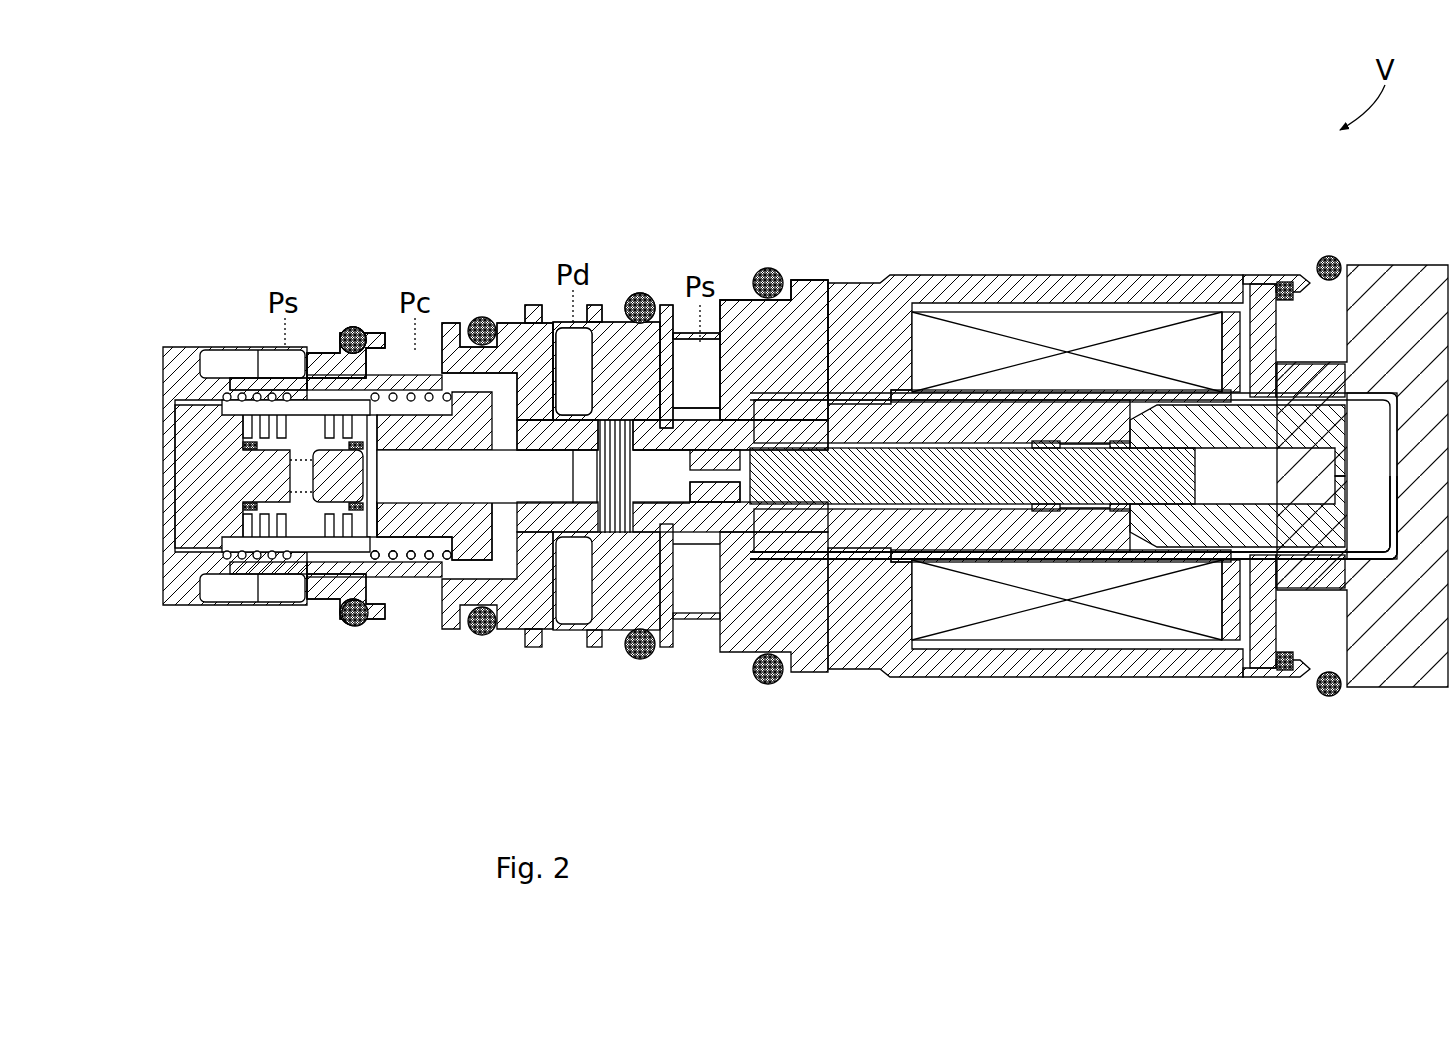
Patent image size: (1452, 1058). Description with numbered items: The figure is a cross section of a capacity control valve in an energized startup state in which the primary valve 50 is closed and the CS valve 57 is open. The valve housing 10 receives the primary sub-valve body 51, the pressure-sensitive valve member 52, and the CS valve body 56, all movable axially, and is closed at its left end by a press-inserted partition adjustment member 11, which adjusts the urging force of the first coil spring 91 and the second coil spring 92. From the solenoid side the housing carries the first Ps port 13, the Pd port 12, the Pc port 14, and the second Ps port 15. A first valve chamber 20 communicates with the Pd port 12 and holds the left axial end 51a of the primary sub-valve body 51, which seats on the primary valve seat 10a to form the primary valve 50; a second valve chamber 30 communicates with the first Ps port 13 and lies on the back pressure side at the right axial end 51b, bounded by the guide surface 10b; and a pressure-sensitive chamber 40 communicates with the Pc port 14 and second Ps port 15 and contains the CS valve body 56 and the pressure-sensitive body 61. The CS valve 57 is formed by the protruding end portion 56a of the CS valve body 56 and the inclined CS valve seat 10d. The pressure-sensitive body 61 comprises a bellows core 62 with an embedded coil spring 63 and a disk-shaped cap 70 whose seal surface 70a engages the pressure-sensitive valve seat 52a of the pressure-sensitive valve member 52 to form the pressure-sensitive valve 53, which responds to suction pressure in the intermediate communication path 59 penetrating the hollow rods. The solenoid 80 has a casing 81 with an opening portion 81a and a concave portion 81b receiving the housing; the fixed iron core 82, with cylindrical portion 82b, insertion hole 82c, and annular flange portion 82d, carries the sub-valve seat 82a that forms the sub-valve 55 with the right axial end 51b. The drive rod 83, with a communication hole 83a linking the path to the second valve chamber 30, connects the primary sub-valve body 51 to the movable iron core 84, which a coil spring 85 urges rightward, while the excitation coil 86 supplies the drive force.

The valve housing 10 is at (212, 340).
The primary valve seat 10a is at (530, 400).
The guide surface 10b is at (600, 400).
The CS valve seat 10d is at (335, 395).
The partition adjustment member 11 is at (165, 468).
The Pd port 12 is at (585, 400).
The first Ps port 13 is at (690, 380).
The Pc port 14 is at (405, 355).
The second Ps port 15 is at (312, 365).
The first valve chamber 20 is at (575, 405).
The second valve chamber 30 is at (700, 410).
The pressure-sensitive chamber 40 is at (500, 350).
The primary valve 50 is at (600, 178).
The primary sub-valve body 51 is at (655, 545).
The left axial end 51a is at (548, 418).
The right axial end 51b is at (800, 330).
The pressure-sensitive valve member 52 is at (497, 528).
The pressure-sensitive valve seat 52a is at (372, 560).
The pressure-sensitive valve 53 is at (310, 768).
The sub-valve 55 is at (890, 178).
The CS valve body 56 is at (240, 370).
The protruding end portion 56a is at (332, 380).
The CS valve 57 is at (240, 178).
The intermediate communication path 59 is at (533, 590).
The pressure-sensitive body 61 is at (255, 550).
The bellows core 62 is at (262, 545).
The coil spring 63 is at (283, 528).
The cap 70 is at (355, 550).
The seal surface 70a is at (383, 570).
The solenoid 80 is at (1240, 255).
The casing 81 is at (737, 690).
The opening portion 81a is at (835, 560).
The concave portion 81b is at (810, 580).
The fixed iron core 82 is at (1075, 285).
The sub-valve seat 82a is at (765, 268).
The cylindrical portion 82b is at (1010, 415).
The insertion hole 82c is at (990, 448).
The annular flange portion 82d is at (860, 300).
The drive rod 83 is at (1158, 440).
The communication hole 83a is at (712, 545).
The movable iron core 84 is at (1262, 545).
The coil spring 85 is at (1140, 570).
The excitation coil 86 is at (1060, 615).
The first coil spring 91 is at (340, 600).
The second coil spring 92 is at (430, 560).